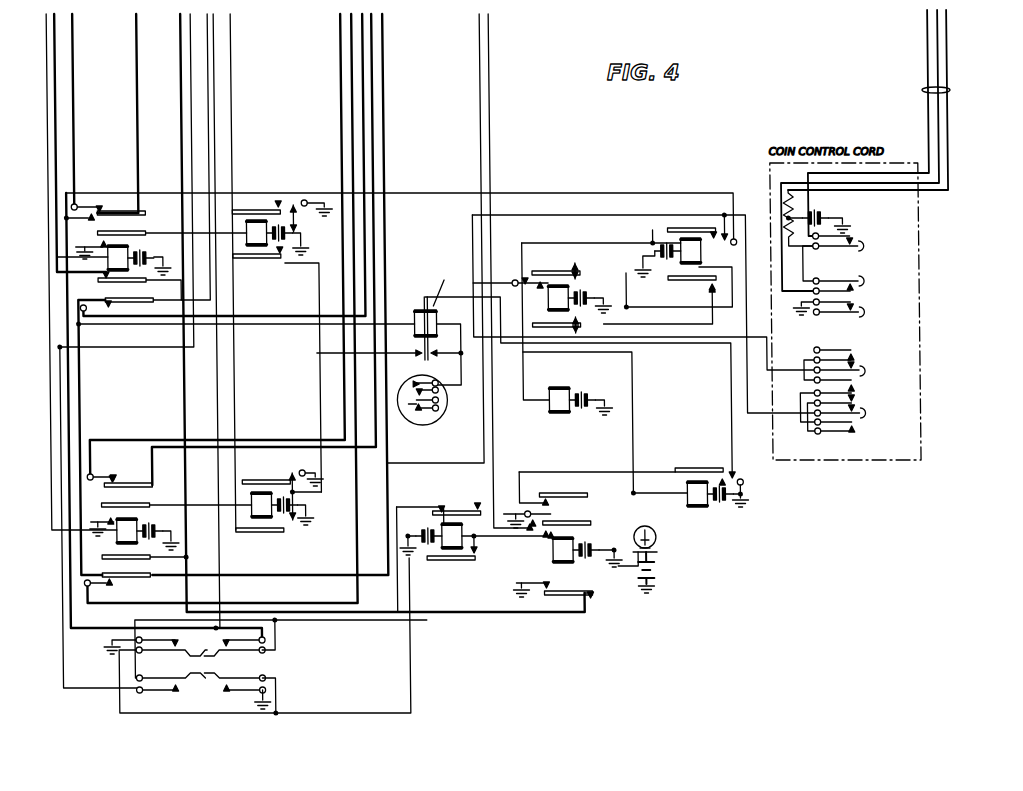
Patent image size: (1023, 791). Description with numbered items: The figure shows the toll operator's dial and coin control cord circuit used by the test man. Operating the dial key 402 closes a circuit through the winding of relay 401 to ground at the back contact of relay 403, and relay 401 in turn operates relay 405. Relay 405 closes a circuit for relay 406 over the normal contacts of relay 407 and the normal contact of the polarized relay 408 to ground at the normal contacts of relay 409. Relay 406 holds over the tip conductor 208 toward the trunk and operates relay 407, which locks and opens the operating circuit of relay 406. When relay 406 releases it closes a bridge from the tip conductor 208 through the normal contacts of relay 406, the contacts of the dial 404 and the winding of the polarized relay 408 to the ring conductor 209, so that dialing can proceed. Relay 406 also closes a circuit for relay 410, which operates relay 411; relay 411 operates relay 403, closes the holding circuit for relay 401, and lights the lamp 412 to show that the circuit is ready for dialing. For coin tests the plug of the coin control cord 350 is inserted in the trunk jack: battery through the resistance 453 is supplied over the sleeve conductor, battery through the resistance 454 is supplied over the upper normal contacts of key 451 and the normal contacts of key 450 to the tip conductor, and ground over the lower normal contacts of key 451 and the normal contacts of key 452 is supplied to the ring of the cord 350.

The tip conductor 208 is at (340, 94).
The ring conductor 209 is at (340, 110).
The coin control cord 350 is at (950, 90).
The relay 401 is at (128, 518).
The dial key 402 is at (250, 680).
The relay 403 is at (448, 523).
The dial 404 is at (416, 424).
The relay 405 is at (260, 520).
The relay 406 is at (690, 238).
The relay 407 is at (558, 285).
The polarized relay 408 is at (414, 338).
The relay 409 is at (698, 480).
The relay 410 is at (557, 387).
The relay 411 is at (562, 540).
The lamp 412 is at (653, 538).
The key 450 is at (862, 238).
The key 451 is at (862, 302).
The key 452 is at (862, 401).
The resistance 453 is at (785, 195).
The resistance 454 is at (785, 235).